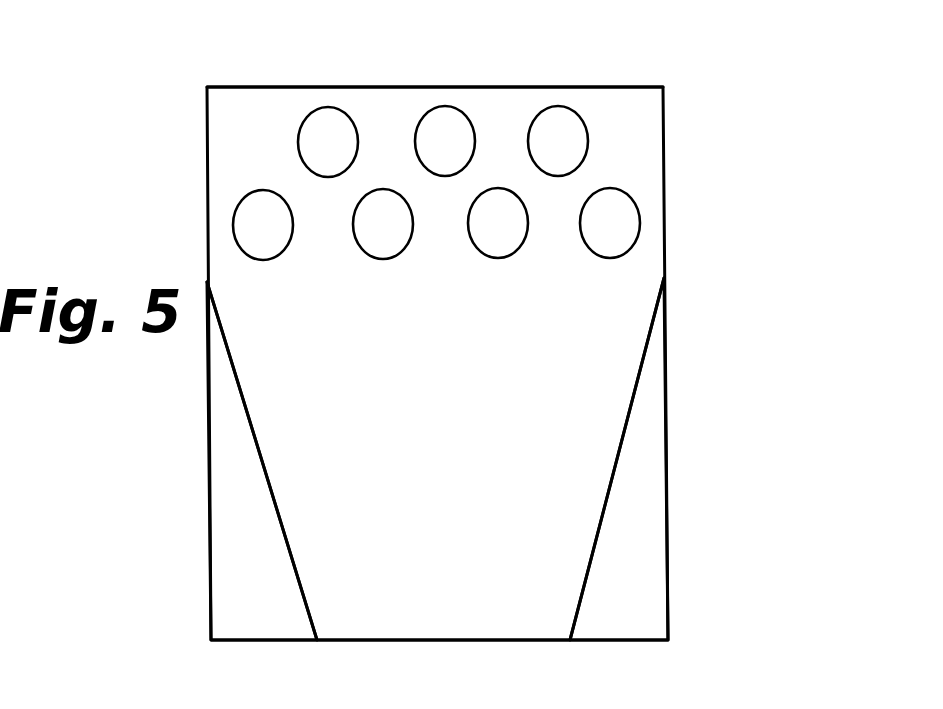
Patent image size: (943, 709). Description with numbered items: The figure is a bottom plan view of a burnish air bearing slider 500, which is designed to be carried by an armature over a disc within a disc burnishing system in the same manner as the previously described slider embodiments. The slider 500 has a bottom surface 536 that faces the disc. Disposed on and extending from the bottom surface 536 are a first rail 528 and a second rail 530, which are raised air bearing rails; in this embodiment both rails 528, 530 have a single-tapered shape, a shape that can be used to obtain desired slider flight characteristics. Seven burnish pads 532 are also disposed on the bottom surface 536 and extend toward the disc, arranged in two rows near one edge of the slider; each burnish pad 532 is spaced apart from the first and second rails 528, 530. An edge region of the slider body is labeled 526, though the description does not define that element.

The burnish air bearing slider 500 is at (708, 140).
The top edge 526 is at (345, 86).
The burnish pad 532 is at (455, 110).
The bottom surface 536 is at (446, 360).
The second rail 530 is at (222, 492).
The first rail 528 is at (655, 467).